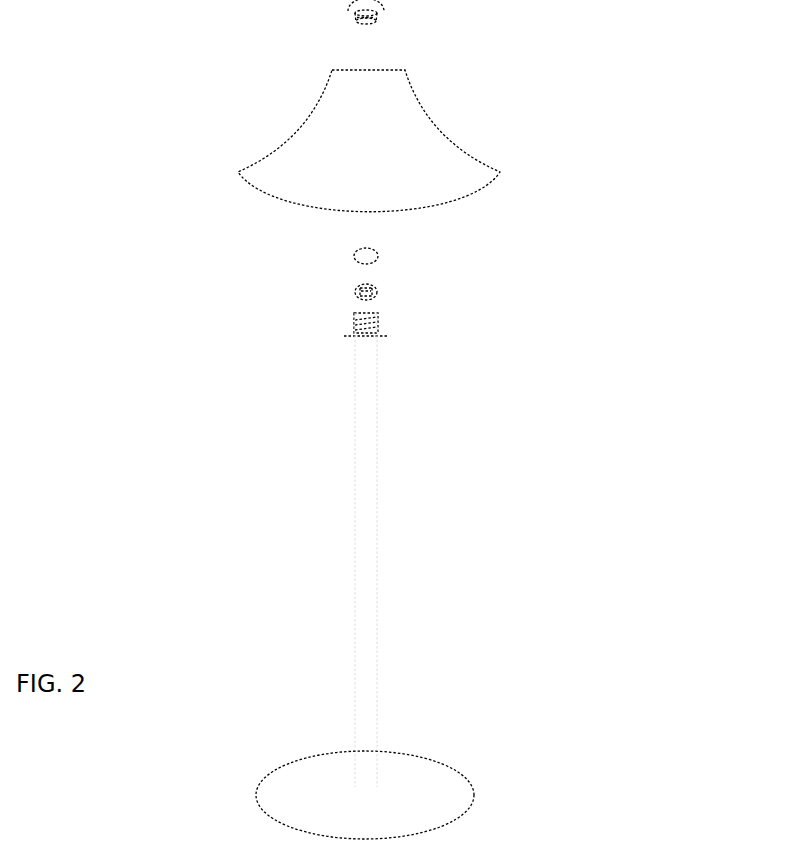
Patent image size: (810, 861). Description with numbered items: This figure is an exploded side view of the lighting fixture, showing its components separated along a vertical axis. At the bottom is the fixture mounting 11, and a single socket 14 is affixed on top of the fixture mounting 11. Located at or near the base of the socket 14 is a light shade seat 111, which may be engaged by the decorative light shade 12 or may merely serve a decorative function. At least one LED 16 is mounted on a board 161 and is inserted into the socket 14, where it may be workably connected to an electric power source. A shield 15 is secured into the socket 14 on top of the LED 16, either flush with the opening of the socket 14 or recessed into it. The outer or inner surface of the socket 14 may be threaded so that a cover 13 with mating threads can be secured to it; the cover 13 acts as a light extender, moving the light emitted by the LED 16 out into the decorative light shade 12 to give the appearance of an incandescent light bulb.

The fixture mounting 11 is at (365, 617).
The light shade seat 111 is at (382, 338).
The decorative light shade 12 is at (292, 130).
The cover 13 is at (382, 10).
The socket 14 is at (380, 325).
The shield 15 is at (353, 263).
The LED 16 is at (352, 298).
The board 161 is at (378, 290).